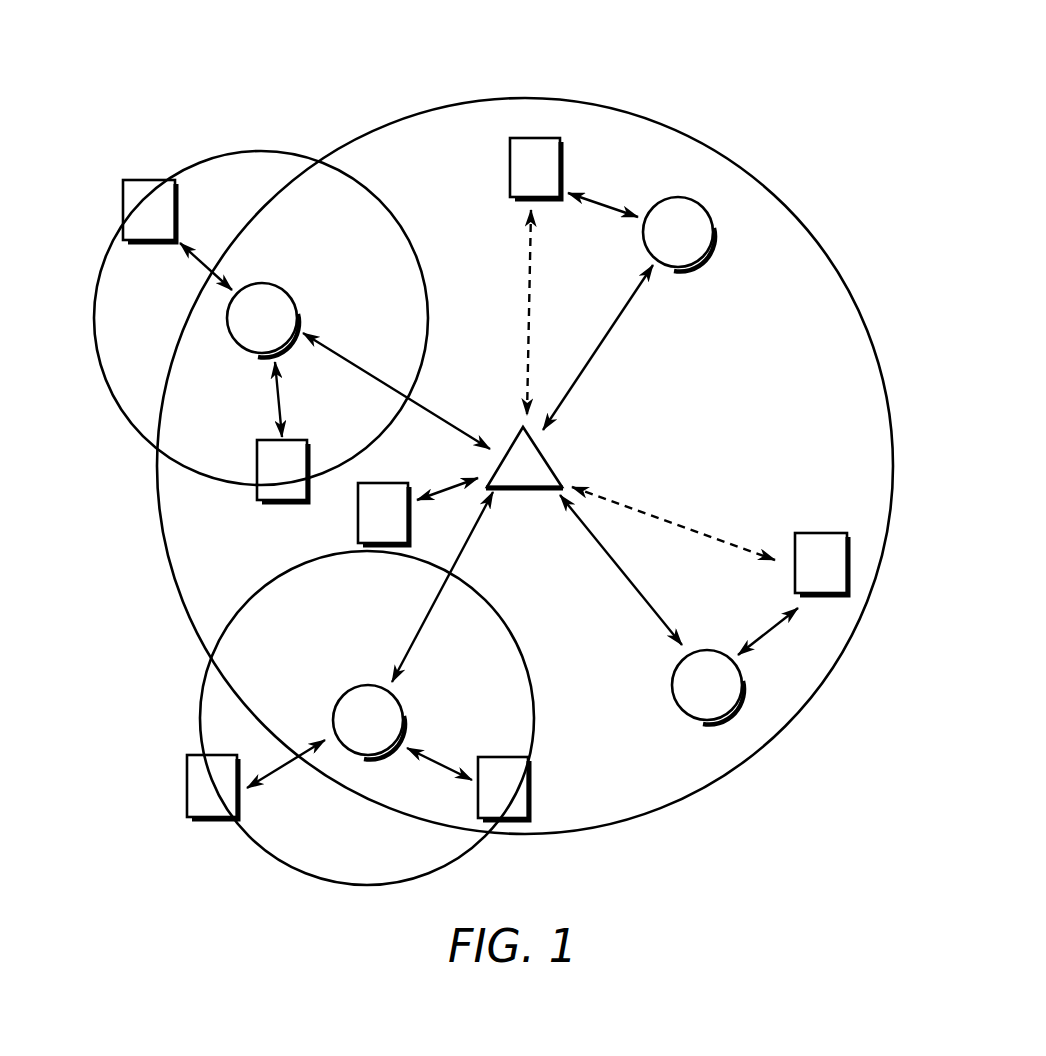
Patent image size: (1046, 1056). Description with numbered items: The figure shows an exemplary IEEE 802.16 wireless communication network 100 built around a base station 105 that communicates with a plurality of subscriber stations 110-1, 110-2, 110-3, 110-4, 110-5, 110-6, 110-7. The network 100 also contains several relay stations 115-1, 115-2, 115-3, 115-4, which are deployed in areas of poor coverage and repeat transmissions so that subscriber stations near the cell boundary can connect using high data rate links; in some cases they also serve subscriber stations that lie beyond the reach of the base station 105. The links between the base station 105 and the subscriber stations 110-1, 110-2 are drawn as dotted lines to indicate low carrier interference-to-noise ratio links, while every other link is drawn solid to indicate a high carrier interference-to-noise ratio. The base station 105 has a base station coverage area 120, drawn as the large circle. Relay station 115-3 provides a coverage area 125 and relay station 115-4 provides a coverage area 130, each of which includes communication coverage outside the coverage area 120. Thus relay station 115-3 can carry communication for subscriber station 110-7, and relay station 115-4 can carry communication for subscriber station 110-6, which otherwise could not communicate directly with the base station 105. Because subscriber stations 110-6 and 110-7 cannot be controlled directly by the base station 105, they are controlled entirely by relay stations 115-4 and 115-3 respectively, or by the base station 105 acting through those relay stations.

The network 100 is at (772, 63).
The base station 105 is at (545, 457).
The subscriber station 110-1 is at (535, 138).
The subscriber station 110-2 is at (820, 533).
The subscriber station 110-3 is at (358, 533).
The subscriber station 110-4 is at (502, 757).
The subscriber station 110-5 is at (296, 440).
The subscriber station 6 110-6 is at (192, 755).
The subscriber station 7 110-7 is at (150, 179).
The relay station 115-1 is at (677, 197).
The relay station 115-2 is at (672, 685).
The relay station 3 115-3 is at (260, 282).
The relay station 4 115-4 is at (368, 685).
The base station coverage area 120 is at (528, 98).
The coverage area 125 is at (263, 150).
The coverage area 130 is at (499, 622).